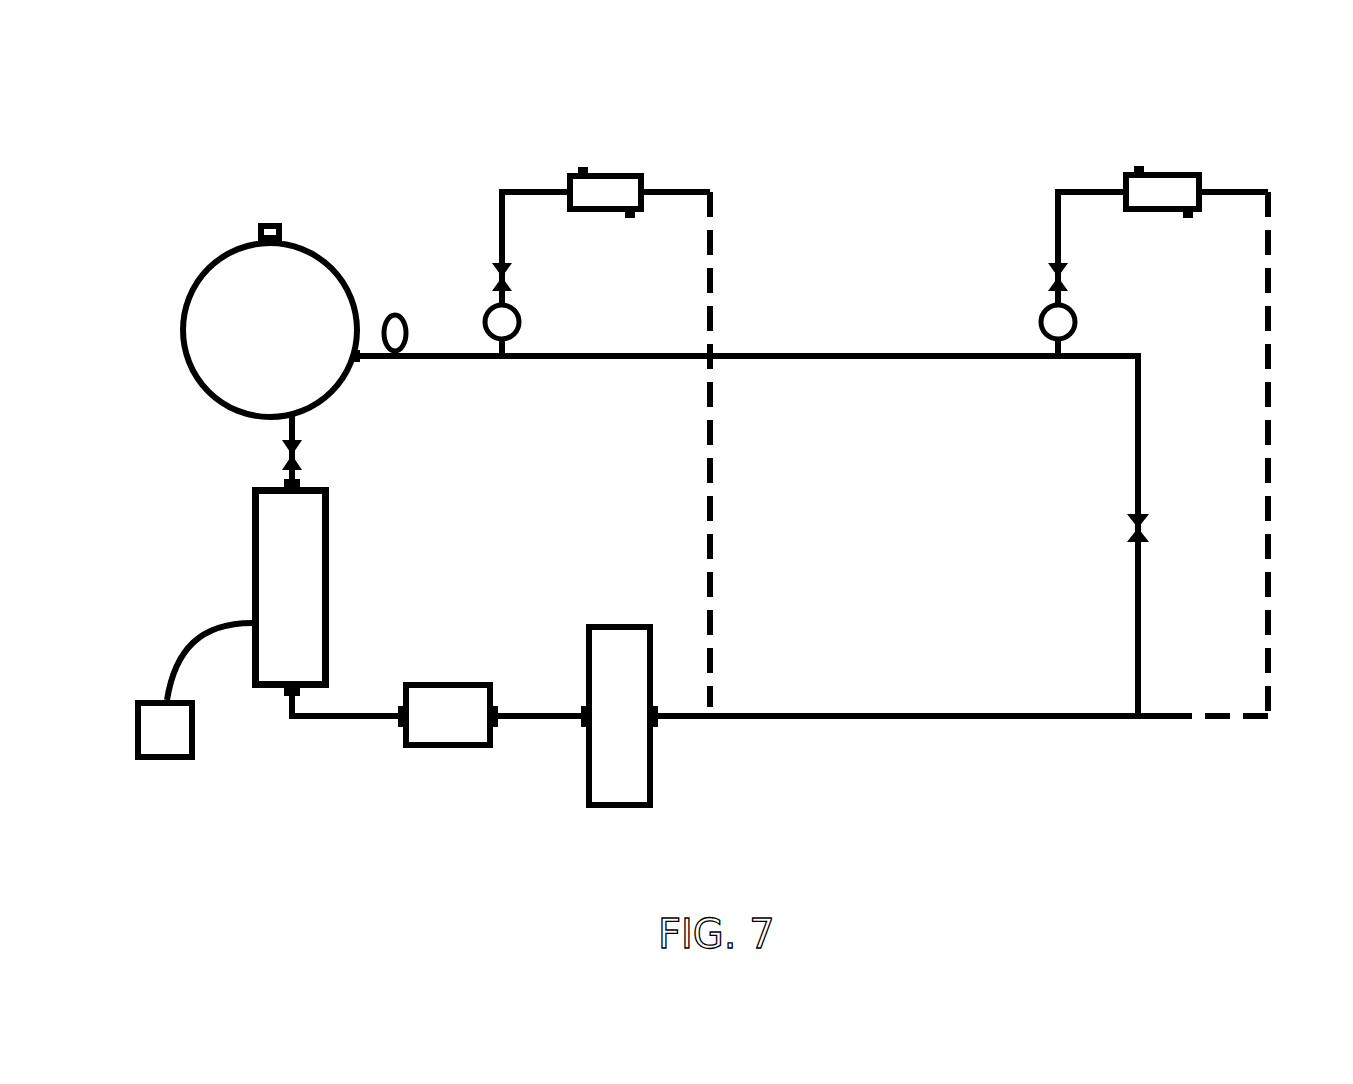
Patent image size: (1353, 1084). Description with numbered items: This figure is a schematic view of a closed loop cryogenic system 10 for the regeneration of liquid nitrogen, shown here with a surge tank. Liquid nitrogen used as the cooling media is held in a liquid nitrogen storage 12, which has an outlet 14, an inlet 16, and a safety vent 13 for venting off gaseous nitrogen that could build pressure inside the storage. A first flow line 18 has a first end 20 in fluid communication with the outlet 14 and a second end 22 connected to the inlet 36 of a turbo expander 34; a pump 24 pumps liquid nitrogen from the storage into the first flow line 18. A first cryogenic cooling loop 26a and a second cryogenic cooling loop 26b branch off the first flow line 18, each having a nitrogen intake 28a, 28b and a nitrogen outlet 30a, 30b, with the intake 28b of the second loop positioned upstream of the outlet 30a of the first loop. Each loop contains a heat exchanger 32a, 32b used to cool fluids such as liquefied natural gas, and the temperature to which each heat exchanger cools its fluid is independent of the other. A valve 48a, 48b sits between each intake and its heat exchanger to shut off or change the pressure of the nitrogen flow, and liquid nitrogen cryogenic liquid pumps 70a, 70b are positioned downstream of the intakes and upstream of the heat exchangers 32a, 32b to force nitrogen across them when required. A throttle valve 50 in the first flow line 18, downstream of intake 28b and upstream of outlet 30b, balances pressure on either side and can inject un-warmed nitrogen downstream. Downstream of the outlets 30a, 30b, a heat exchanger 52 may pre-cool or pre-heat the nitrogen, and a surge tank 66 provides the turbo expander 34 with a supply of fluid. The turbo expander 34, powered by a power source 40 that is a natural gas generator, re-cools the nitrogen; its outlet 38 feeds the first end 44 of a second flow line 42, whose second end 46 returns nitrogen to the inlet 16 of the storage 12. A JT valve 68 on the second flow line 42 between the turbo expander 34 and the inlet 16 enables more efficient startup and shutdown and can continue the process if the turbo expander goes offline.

The system 10 is at (218, 133).
The liquid nitrogen storage 12 is at (183, 318).
The vent 13 is at (273, 222).
The outlet 14 is at (367, 352).
The inlet 16 is at (245, 420).
The first flow line 18 is at (913, 353).
The first end 20 is at (370, 352).
The second end 22 is at (287, 703).
The pump 24 is at (400, 313).
The first cryogenic cooling loop 26a is at (678, 187).
The second cryogenic cooling loop 26b is at (1270, 308).
The nitrogen intake 28a is at (492, 350).
The nitrogen intake 28b is at (1053, 350).
The nitrogen outlet 30a is at (712, 690).
The nitrogen outlet 30b is at (1148, 720).
The heat exchanger 32a is at (630, 173).
The heat exchanger 32b is at (1160, 172).
The turbo expander 34 is at (252, 610).
The inlet 36 is at (277, 697).
The outlet 38 is at (277, 477).
The power source 40 is at (133, 742).
The second flow line 42 is at (280, 433).
The first end 44 is at (282, 470).
The second end 46 is at (287, 427).
The valve 48a is at (495, 265).
The valve 48b is at (1048, 272).
The throttle valve 50 is at (1148, 525).
The heat exchanger 52 is at (453, 750).
The surge tank 66 is at (655, 783).
The valve 68 is at (282, 449).
The liquid nitrogen cryogenic liquid pump 70a is at (520, 317).
The liquid nitrogen cryogenic liquid pump 70b is at (1077, 310).